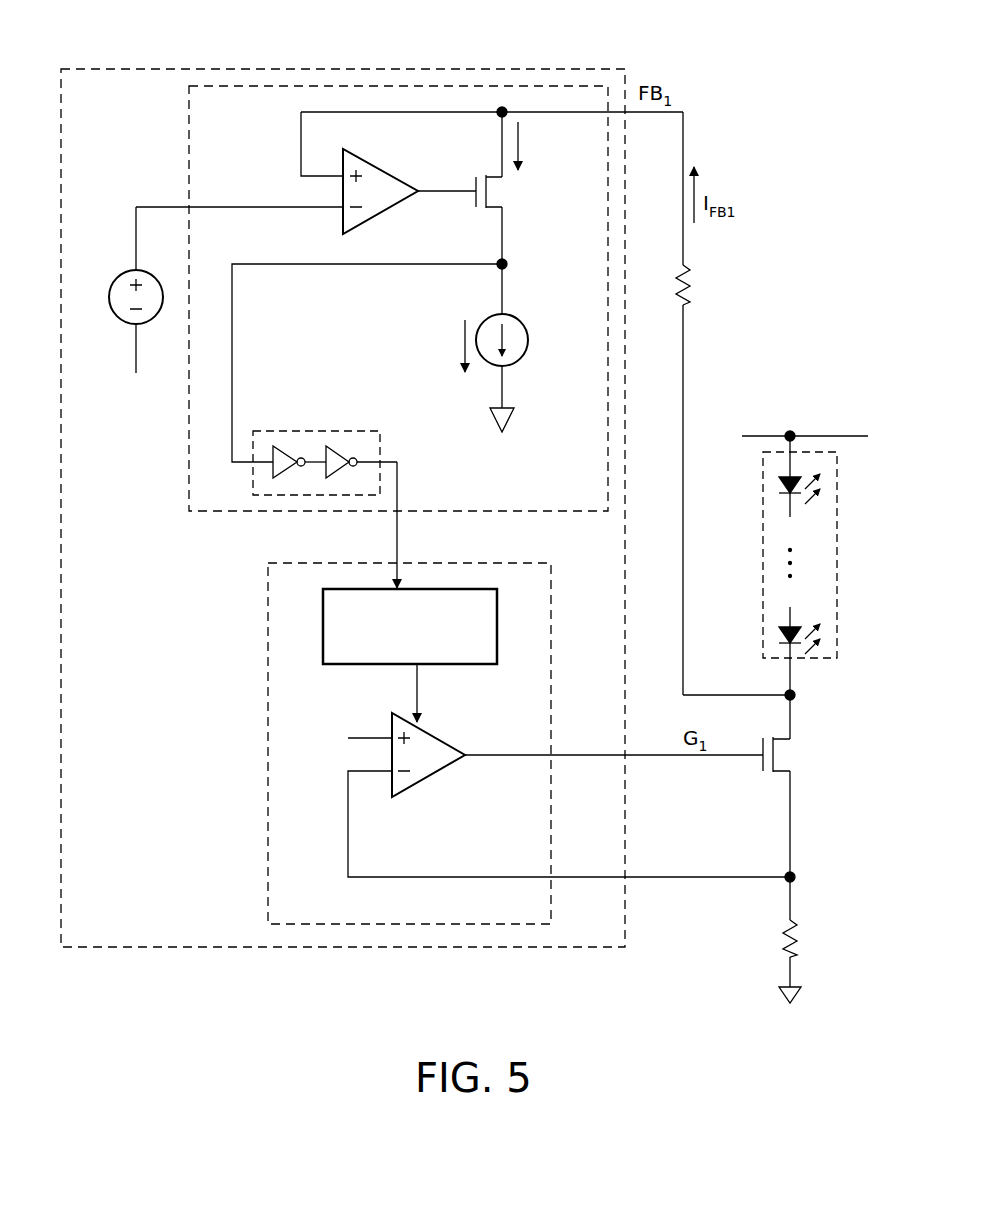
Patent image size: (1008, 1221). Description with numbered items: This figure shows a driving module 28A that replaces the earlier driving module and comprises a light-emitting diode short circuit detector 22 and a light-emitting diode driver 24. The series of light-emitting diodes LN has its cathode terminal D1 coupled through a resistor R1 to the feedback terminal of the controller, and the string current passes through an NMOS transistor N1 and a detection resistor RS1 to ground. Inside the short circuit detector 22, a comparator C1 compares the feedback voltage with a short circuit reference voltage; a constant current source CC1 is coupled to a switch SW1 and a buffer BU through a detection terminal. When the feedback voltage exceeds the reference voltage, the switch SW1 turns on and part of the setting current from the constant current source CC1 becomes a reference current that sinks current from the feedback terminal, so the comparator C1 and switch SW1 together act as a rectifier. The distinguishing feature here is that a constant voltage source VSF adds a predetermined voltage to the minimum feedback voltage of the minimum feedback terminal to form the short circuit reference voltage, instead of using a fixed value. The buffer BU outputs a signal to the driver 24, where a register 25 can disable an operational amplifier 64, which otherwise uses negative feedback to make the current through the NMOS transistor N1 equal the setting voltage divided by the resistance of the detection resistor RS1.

The light-emitting diode short circuit detector 22 is at (351, 86).
The driving module 28A is at (465, 69).
The light-emitting diode driver 24 is at (415, 924).
The register 25 is at (497, 624).
The operational amplifier 64 is at (424, 782).
The constant voltage source VSF is at (118, 280).
The comparator C1 is at (380, 165).
The switch SW1 is at (497, 190).
The constant current source CC1 is at (528, 342).
The buffer BU is at (318, 431).
The resistor R1 is at (666, 403).
The cathode terminal D1 is at (736, 685).
The series of light-emitting diodes LN is at (817, 452).
The NMOS transistor N1 is at (785, 753).
The detection resistor RS1 is at (767, 940).